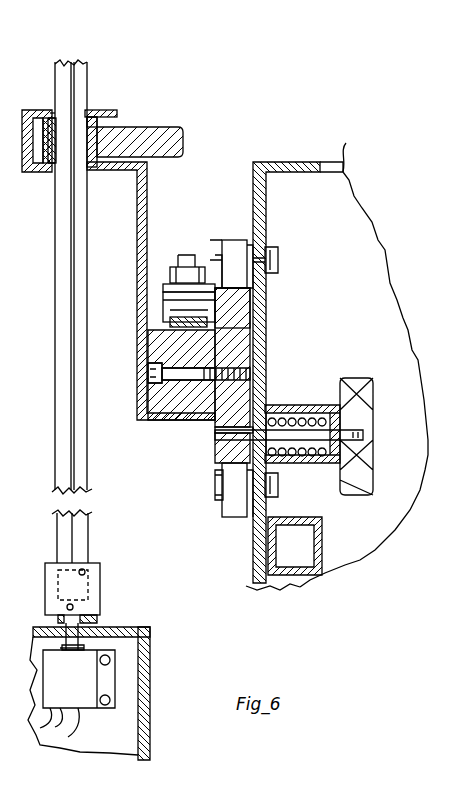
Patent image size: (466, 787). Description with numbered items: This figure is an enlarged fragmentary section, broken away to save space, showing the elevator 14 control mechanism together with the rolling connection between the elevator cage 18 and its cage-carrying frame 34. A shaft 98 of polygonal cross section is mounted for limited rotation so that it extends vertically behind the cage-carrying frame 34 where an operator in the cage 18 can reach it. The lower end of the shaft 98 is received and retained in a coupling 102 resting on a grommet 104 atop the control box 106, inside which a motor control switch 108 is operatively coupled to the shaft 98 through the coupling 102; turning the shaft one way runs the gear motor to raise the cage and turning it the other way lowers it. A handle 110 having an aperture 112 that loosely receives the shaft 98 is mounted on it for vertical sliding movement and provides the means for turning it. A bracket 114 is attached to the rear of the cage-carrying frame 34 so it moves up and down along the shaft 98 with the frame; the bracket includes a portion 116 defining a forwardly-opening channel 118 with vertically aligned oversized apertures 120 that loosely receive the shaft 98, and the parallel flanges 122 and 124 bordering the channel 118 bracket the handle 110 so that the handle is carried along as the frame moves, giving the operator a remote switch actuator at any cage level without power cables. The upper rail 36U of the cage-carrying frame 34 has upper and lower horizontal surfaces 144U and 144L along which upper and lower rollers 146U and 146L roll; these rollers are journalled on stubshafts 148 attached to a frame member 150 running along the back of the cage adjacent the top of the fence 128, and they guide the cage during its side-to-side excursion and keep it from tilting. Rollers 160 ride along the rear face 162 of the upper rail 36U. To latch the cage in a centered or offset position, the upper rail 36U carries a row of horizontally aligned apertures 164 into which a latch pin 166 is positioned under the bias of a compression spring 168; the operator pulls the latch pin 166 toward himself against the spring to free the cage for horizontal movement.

The elevator 14 is at (290, 138).
The elevator cage 18 is at (255, 330).
The cage-carrying frame 34 is at (168, 435).
The upper rail 36U is at (263, 308).
The shaft 98 is at (67, 318).
The coupling 102 is at (100, 582).
The grommet 104 is at (97, 622).
The control box 106 is at (150, 663).
The motor control switch 108 is at (100, 630).
The handle 110 is at (163, 127).
The aperture 112 is at (82, 112).
The bracket 114 is at (147, 203).
The portion 116 is at (33, 110).
The forwardly-opening channel 118 is at (117, 127).
The oversized apertures 120 is at (50, 110).
The flange 122 is at (50, 110).
The flange 124 is at (33, 173).
The fence 128 is at (263, 190).
The upper horizontal surface 144U is at (250, 247).
The lower horizontal surface 144L is at (243, 500).
The upper roller 146U is at (240, 238).
The lower roller 146L is at (237, 513).
The stubshaft 148 is at (188, 265).
The frame member 150 is at (250, 360).
The roller 160 is at (165, 307).
The rear face 162 is at (168, 321).
The apertures 164 is at (215, 430).
The latch pin 166 is at (362, 405).
The compression spring 168 is at (282, 407).